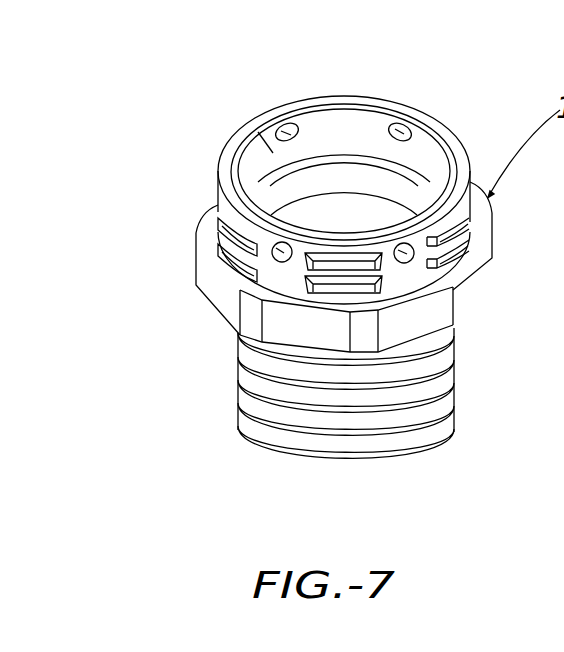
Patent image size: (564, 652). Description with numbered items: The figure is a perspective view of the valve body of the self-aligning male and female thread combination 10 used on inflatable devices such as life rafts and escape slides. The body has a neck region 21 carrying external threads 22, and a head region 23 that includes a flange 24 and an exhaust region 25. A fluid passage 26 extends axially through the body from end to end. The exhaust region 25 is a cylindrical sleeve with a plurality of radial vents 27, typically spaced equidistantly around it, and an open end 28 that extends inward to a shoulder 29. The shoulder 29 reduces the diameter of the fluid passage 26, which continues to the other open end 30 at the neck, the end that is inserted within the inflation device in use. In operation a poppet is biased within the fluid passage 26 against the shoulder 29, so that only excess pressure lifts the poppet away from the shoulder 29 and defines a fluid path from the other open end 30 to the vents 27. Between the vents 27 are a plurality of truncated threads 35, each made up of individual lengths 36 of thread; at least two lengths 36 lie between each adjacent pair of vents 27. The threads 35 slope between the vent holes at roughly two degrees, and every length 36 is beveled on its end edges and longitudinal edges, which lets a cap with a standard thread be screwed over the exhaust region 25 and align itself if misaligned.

The male and female thread combination 10 is at (143, 332).
The neck region 21 is at (448, 365).
The external threads 22 is at (271, 400).
The head region 23 is at (220, 296).
The flange 24 is at (492, 246).
The exhaust region 25 is at (428, 128).
The fluid passage 26 is at (344, 226).
The radial vents 27 is at (311, 125).
The open end 28 is at (273, 153).
The shoulder 29 is at (413, 202).
The other open end 30 is at (384, 462).
The truncated threads 35 is at (221, 225).
The length of thread 36 is at (228, 238).